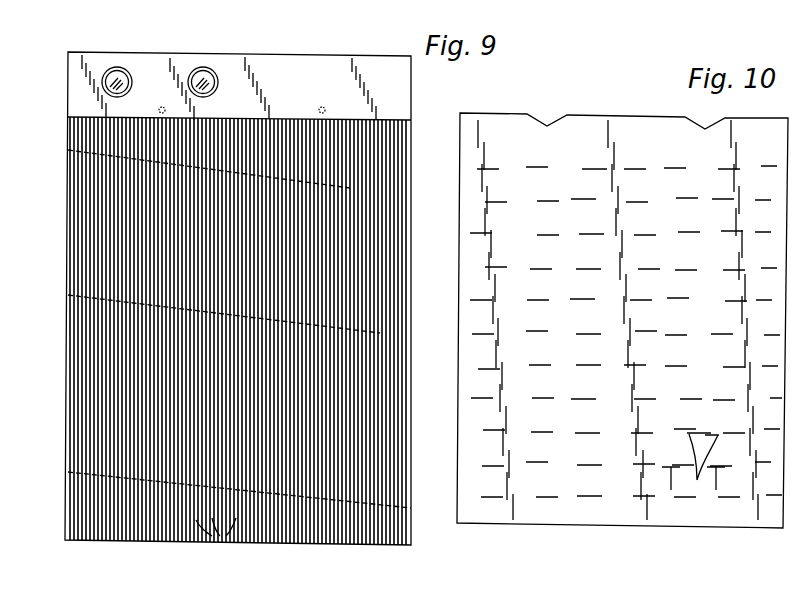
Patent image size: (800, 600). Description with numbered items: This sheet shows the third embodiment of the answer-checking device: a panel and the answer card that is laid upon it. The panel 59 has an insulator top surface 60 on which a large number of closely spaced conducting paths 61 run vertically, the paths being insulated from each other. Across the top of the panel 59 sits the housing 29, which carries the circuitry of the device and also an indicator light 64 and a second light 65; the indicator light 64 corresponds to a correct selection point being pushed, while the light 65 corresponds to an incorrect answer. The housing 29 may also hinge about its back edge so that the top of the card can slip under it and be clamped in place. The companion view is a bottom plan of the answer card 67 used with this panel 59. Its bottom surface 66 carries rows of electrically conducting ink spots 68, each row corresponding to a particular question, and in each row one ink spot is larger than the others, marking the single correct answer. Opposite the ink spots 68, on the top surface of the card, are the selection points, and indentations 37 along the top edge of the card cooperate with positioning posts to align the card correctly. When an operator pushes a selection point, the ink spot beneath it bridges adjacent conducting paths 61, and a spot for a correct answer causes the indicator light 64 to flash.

In FIG. 9, the housing 29 is at (340, 62).
In FIG. 9, the indicator light 64 is at (120, 78).
In FIG. 9, the light 65 is at (206, 78).
In FIG. 9, the panel 59 is at (52, 275).
In FIG. 9, the insulator top surface 60 is at (80, 376).
In FIG. 9, the conducting paths 61 is at (208, 546).
In FIG. 10, the indentations 37 is at (697, 113).
In FIG. 10, the bottom surface 66 is at (520, 513).
In FIG. 10, the answer card 67 is at (608, 538).
In FIG. 10, the electrically conducting ink spots 68 is at (742, 499).